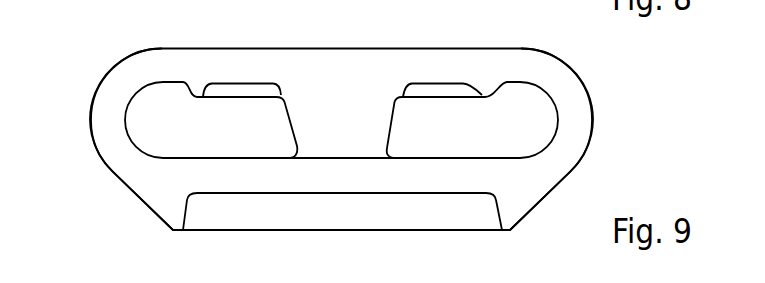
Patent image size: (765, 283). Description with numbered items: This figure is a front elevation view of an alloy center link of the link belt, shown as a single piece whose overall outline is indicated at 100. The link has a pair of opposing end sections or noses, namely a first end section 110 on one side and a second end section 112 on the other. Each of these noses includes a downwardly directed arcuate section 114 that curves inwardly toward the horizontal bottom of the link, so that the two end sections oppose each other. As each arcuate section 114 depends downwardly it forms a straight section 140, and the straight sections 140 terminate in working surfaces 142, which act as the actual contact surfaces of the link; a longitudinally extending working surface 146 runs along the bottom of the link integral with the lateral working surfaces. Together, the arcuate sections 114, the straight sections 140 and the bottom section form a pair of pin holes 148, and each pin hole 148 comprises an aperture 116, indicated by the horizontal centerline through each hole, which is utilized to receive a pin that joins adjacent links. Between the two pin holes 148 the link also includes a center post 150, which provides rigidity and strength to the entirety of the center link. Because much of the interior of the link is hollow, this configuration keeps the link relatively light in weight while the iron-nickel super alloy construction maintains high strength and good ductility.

The clip 100 is at (418, 48).
The first end section 110 is at (98, 85).
The second end section 112 is at (585, 83).
The arcuate section 114 is at (100, 163).
The aperture 116 is at (147, 121).
The straight section 140 is at (138, 200).
The working surface 142 is at (175, 232).
The longitudinally extending working surface 146 is at (233, 230).
The pin hole 148 is at (153, 107).
The center post 150 is at (378, 115).